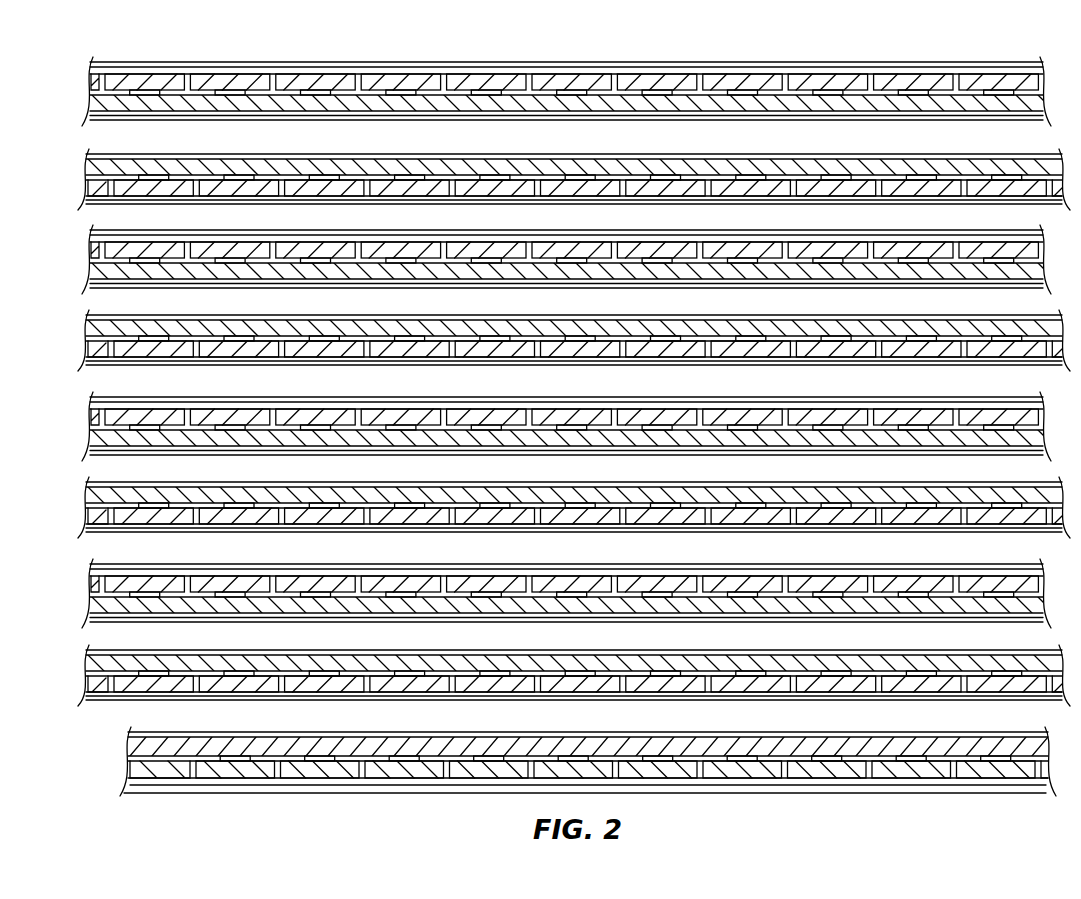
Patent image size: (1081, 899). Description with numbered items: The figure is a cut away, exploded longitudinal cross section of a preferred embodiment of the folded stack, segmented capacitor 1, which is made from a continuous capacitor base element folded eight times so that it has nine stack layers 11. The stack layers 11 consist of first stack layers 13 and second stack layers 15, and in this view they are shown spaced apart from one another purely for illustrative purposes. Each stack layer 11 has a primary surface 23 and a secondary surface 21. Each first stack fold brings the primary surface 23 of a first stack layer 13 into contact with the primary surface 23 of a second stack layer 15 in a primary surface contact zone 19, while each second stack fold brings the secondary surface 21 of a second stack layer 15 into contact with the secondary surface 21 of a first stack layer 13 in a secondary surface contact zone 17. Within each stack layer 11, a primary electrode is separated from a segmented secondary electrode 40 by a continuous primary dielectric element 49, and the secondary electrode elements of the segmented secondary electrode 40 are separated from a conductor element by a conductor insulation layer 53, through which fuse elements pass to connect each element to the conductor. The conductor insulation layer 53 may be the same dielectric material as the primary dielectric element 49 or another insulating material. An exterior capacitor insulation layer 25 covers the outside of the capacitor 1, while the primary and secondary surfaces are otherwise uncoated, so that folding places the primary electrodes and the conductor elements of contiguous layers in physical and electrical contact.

The folded stack, segmented capacitor 1 is at (468, 66).
The stack layer 11 is at (228, 88).
The first stack layer 13 is at (566, 80).
The second stack layer 15 is at (540, 160).
The secondary surface contact zone 17 is at (697, 203).
The primary surface contact zone 19 is at (290, 118).
The secondary surface 21 is at (768, 78).
The primary surface 23 is at (860, 118).
The exterior capacitor insulation layer 25 is at (963, 63).
The segmented secondary electrode 40 is at (102, 93).
The primary dielectric element 49 is at (150, 108).
The conductor insulation layer 53 is at (398, 84).